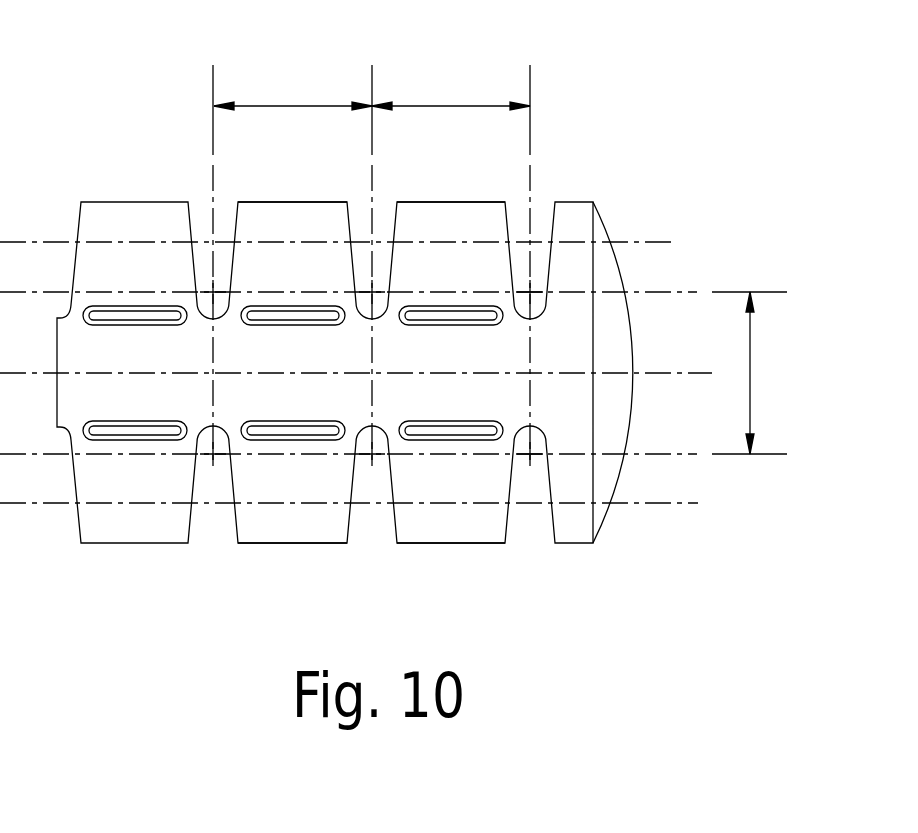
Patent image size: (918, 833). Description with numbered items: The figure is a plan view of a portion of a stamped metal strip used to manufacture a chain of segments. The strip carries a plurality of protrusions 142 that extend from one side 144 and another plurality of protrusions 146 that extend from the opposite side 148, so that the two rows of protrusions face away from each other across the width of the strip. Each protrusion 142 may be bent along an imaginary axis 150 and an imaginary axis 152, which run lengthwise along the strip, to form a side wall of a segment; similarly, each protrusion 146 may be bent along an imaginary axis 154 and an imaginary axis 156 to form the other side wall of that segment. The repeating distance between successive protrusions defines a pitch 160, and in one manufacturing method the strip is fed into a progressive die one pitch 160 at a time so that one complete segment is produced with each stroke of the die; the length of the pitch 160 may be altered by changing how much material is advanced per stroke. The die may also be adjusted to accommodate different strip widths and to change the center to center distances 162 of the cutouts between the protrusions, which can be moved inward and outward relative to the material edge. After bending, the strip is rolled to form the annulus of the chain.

The protrusions 142 is at (291, 202).
The side 144 is at (578, 150).
The protrusions 146 is at (297, 530).
The opposite side 148 is at (579, 577).
The imaginary axis 150 is at (667, 292).
The imaginary axis 152 is at (645, 242).
The imaginary axis 154 is at (655, 454).
The imaginary axis 156 is at (677, 503).
The pitch 160 is at (290, 105).
The center to center distance 162 is at (749, 355).